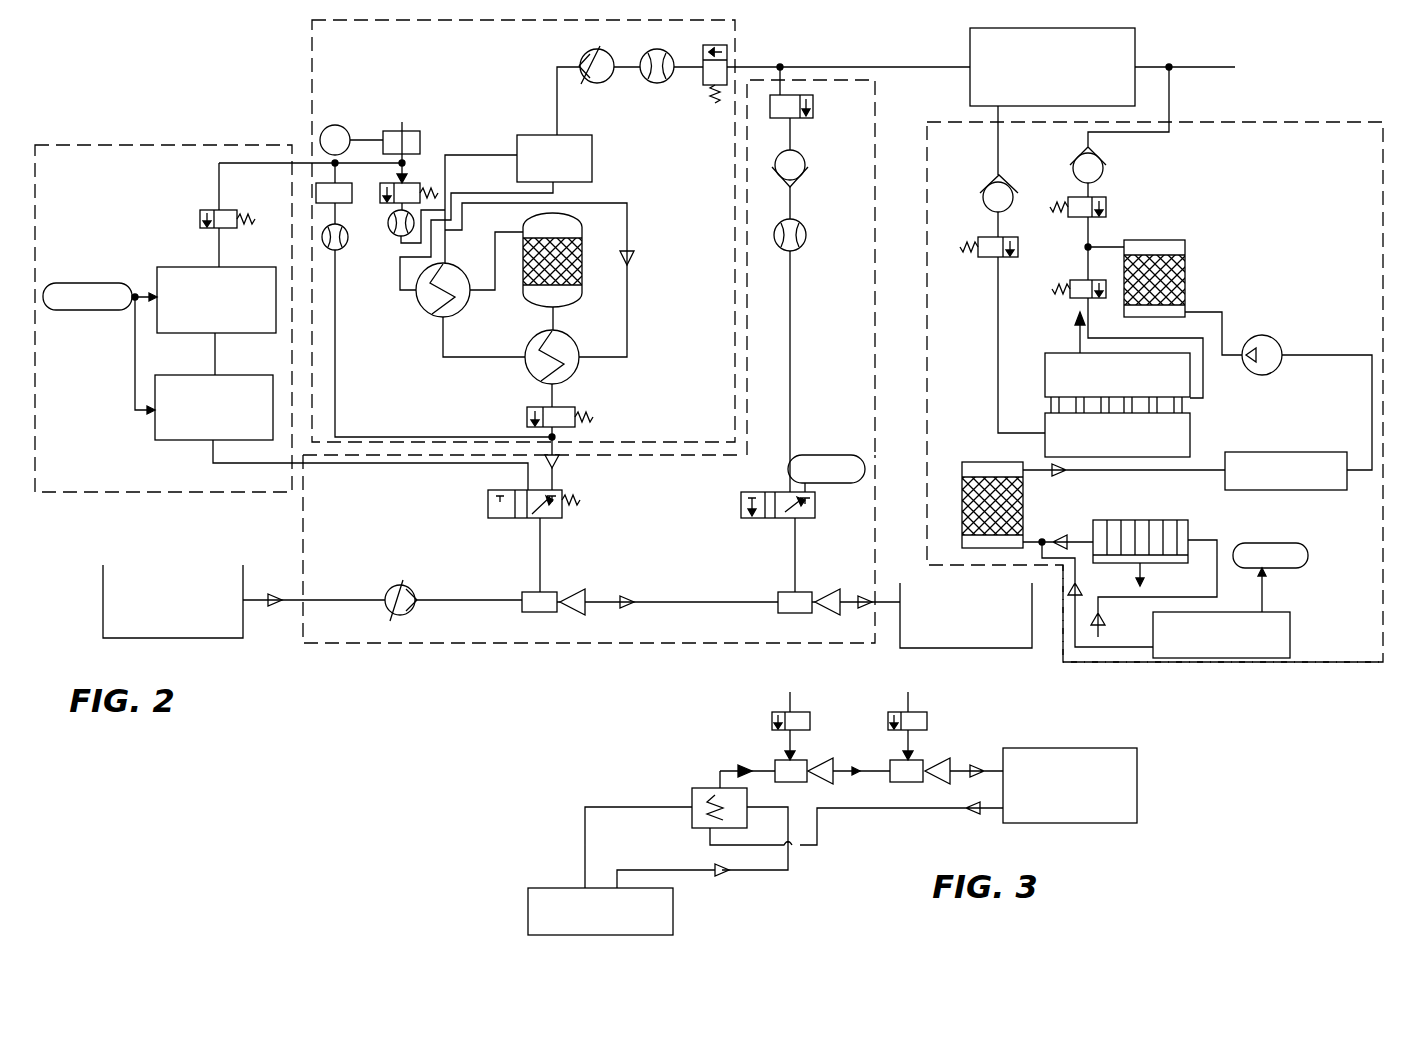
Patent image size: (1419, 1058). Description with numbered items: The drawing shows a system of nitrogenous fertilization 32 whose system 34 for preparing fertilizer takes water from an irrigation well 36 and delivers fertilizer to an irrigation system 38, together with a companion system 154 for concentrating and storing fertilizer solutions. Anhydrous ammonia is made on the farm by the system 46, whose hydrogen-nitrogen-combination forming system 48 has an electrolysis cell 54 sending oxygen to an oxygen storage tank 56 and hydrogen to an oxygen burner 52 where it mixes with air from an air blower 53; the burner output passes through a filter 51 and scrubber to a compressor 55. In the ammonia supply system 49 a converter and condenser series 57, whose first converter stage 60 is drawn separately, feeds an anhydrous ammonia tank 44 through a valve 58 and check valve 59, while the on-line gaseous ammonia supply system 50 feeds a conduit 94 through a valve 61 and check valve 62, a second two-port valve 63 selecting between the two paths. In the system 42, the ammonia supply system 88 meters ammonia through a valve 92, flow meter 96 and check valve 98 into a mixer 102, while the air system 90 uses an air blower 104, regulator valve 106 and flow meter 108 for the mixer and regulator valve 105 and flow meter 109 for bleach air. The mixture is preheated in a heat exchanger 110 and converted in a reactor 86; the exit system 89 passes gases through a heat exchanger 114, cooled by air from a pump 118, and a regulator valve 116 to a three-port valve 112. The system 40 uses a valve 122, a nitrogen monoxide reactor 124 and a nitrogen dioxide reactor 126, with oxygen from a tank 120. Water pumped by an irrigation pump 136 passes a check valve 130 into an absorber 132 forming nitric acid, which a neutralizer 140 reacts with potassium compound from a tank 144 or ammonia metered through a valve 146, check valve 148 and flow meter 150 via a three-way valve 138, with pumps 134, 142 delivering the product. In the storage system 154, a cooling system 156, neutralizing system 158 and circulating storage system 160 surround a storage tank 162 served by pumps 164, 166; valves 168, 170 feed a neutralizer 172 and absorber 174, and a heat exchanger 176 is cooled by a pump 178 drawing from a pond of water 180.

In FIG. 2, the system of nitrogenous fertilization 32 is at (237, 84).
In FIG. 2, the system for preparing nitrogenous fertilizer 34 is at (682, 636).
In FIG. 2, the irrigation well 36 is at (205, 638).
In FIG. 2, the irrigation system 38 is at (1000, 648).
In FIG. 2, the first system for preparing nitrogen oxides 40 is at (188, 158).
In FIG. 2, the second system for preparing nitrogen oxides 42 is at (735, 60).
In FIG. 2, the anhydrous ammonia tank 44 is at (1138, 54).
In FIG. 2, the system for preparing anhydrous ammonia 46 is at (922, 506).
In FIG. 2, the hydrogen-nitrogen-combination forming system 48 is at (1162, 508).
In FIG. 2, the anhydrous ammonia supply system 49 is at (967, 364).
In FIG. 2, the on-line gaseous ammonia supply system 50 is at (1208, 290).
In FIG. 2, the filter 51 is at (1188, 534).
In FIG. 2, the oxygen burner 52 is at (985, 462).
In FIG. 2, the air blower 53 is at (1100, 618).
In FIG. 2, the electrolysis cell 54 is at (1315, 490).
In FIG. 2, the compressor 55 is at (1276, 343).
In FIG. 2, the oxygen storage tank 56 is at (1308, 556).
In FIG. 2, the converter and condenser series 57 is at (1045, 378).
In FIG. 2, the valve 58 is at (1012, 237).
In FIG. 2, the check valve 59 is at (983, 203).
In FIG. 2, the first converter stage 60 is at (1185, 250).
In FIG. 2, the valve 61 is at (1107, 205).
In FIG. 2, the check valve 62 is at (1103, 163).
In FIG. 2, the second two-port valve 63 is at (1084, 280).
In FIG. 2, the reactor 86 is at (591, 250).
In FIG. 2, the system for supplying anhydrous ammonia to the reactor 88 is at (626, 100).
In FIG. 2, the system for supplying nitrogen oxides and waste gases 89 is at (585, 397).
In FIG. 2, the system for supplying air 90 is at (427, 138).
In FIG. 2, the two-port infinitely-variable normally-closed valve 92 is at (716, 63).
In FIG. 2, the conduit 94 is at (866, 67).
In FIG. 2, the flow meter 96 is at (660, 50).
In FIG. 2, the check valve 98 is at (600, 50).
In FIG. 2, the mixer 102 is at (590, 152).
In FIG. 2, the air blower 104 is at (400, 123).
In FIG. 2, the two-stage regulator valve 105 is at (348, 190).
In FIG. 2, the two-port infinitely-variable two-stage regulator valve 106 is at (393, 203).
In FIG. 2, the flow meter 108 is at (392, 233).
In FIG. 2, the flow meter 109 is at (338, 250).
In FIG. 2, the heat exchanger 110 is at (455, 313).
In FIG. 2, the three-position three-port valve 112 is at (560, 517).
In FIG. 2, the heat exchanger 114 is at (570, 345).
In FIG. 2, the two-port infinitely-variable normally-closed two-stage regulator valve 116 is at (575, 425).
In FIG. 2, the pump 118 is at (630, 264).
In FIG. 2, the tank 120 is at (98, 284).
In FIG. 2, the two-port infinitely-variable normally-closed valve 122 is at (212, 210).
In FIG. 2, the nitrogen monoxide reactor 124 is at (190, 333).
In FIG. 2, the nitrogen dioxide reactor 126 is at (190, 440).
In FIG. 2, the check valve 130 is at (390, 586).
In FIG. 2, the absorber 132 is at (545, 612).
In FIG. 2, the pump 134 is at (632, 599).
In FIG. 2, the irrigation pump 136 is at (277, 608).
In FIG. 2, the three-way three-port valve 138 is at (757, 518).
In FIG. 2, the neutralizer 140 is at (800, 613).
In FIG. 2, the pump 142 is at (862, 608).
In FIG. 2, the tank 144 is at (822, 456).
In FIG. 2, the two-port infinitely-variable normally-closed valve 146 is at (813, 112).
In FIG. 2, the check valve 148 is at (806, 160).
In FIG. 2, the flow meter 150 is at (805, 228).
In FIG. 3, the system for concentrating and storing fertilizers 154 is at (678, 724).
In FIG. 3, the cooling system 156 is at (755, 876).
In FIG. 3, the neutralizing system 158 is at (836, 742).
In FIG. 3, the circulating storage system 160 is at (1004, 740).
In FIG. 3, the storage tank 162 is at (1080, 823).
In FIG. 3, the pump 164 is at (978, 764).
In FIG. 3, the pump 166 is at (978, 816).
In FIG. 3, the two-port continuously-variable valve 168 is at (786, 708).
In FIG. 3, the two-port continuously-variable valve 170 is at (918, 710).
In FIG. 3, the neutralizer 172 is at (792, 782).
In FIG. 3, the absorber 174 is at (915, 782).
In FIG. 3, the heat exchanger 176 is at (698, 788).
In FIG. 3, the pump 178 is at (717, 878).
In FIG. 3, the pond of water 180 is at (678, 920).